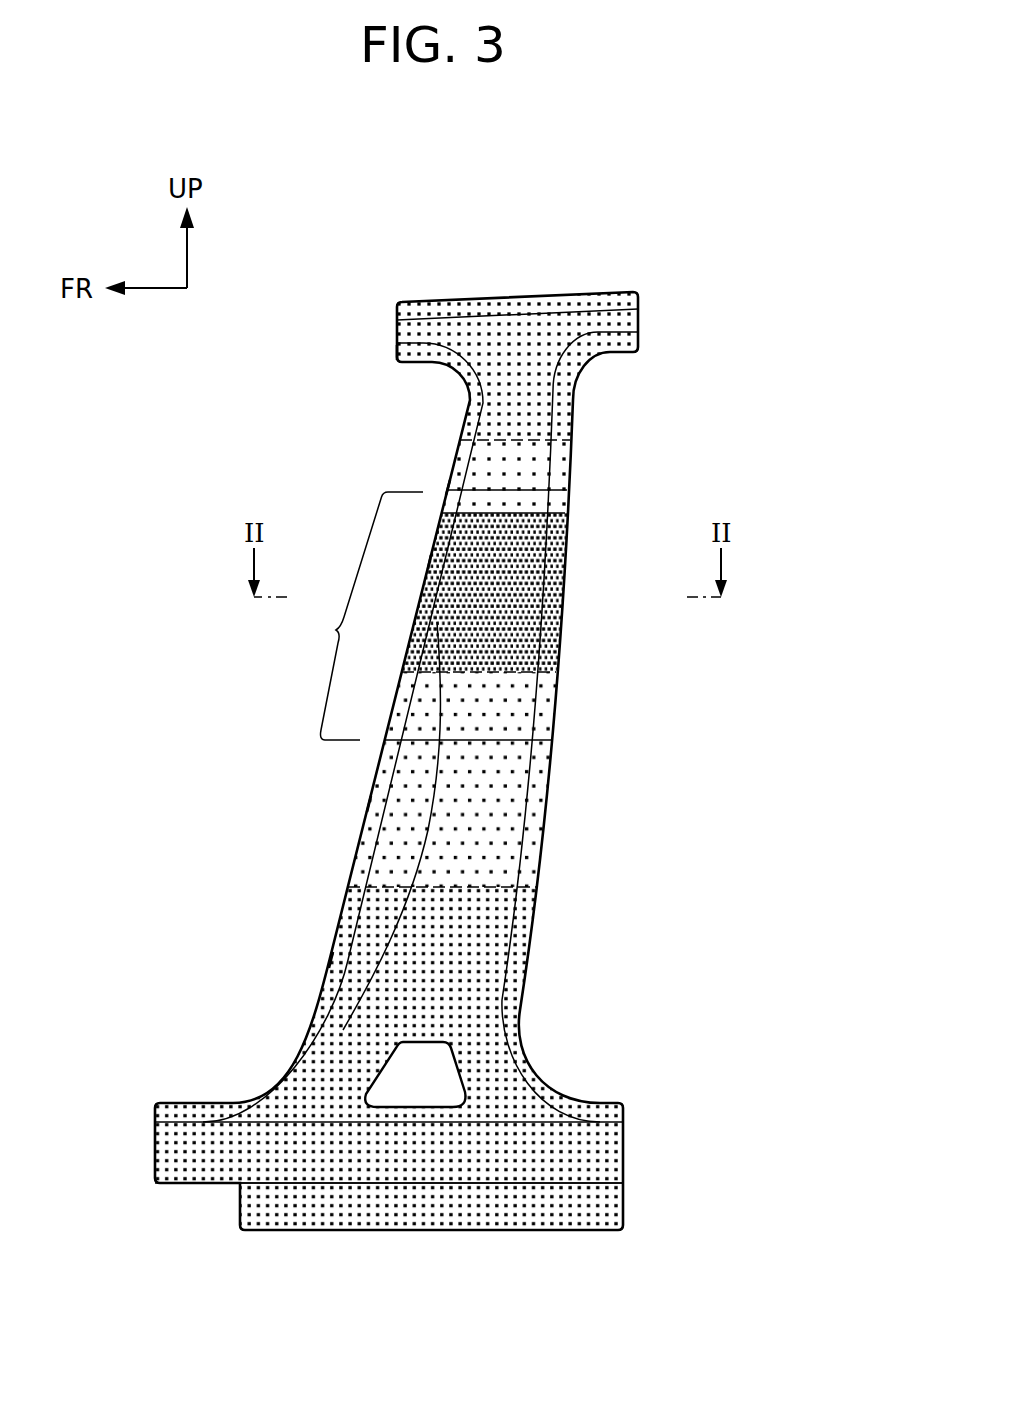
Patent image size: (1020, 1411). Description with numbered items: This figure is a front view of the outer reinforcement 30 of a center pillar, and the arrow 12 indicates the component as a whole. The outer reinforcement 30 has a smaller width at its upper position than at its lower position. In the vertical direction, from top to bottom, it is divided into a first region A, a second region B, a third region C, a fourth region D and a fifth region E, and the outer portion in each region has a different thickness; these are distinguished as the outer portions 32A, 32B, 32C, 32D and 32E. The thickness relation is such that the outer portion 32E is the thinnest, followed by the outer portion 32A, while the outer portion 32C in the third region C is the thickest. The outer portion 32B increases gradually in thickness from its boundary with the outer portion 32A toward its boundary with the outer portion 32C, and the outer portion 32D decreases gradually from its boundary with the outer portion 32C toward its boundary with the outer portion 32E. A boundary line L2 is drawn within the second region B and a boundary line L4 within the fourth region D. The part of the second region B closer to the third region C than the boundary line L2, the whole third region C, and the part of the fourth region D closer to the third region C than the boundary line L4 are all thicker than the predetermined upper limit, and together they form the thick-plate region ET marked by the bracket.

The side frame 12 is at (735, 185).
The outer reinforcement 30 is at (616, 282).
The first region A is at (389, 355).
The second region B is at (438, 487).
The third region C is at (417, 562).
The fourth region D is at (361, 803).
The fifth region E is at (323, 961).
The thick-plate region ET is at (360, 616).
The outer portion 32A is at (542, 412).
The outer portion 32B is at (541, 471).
The outer portion 32C is at (535, 560).
The outer portion 32D is at (505, 836).
The outer portion 32E is at (488, 962).
The boundary line L2 is at (537, 492).
The boundary line L4 is at (505, 742).